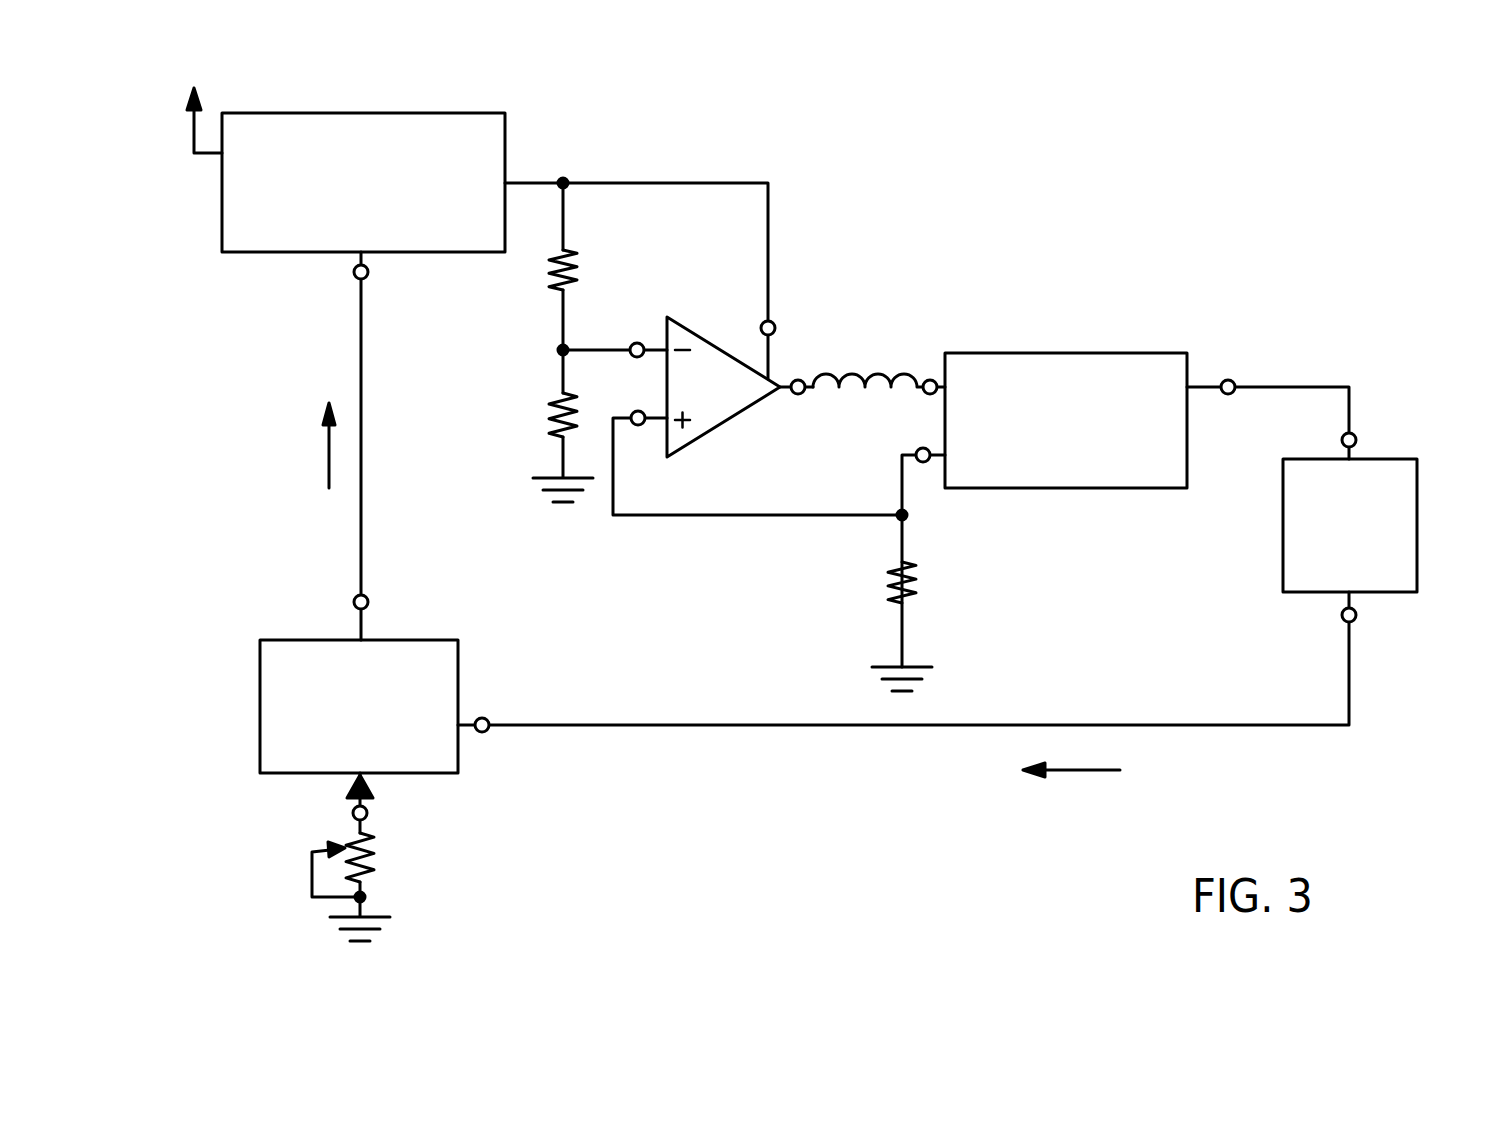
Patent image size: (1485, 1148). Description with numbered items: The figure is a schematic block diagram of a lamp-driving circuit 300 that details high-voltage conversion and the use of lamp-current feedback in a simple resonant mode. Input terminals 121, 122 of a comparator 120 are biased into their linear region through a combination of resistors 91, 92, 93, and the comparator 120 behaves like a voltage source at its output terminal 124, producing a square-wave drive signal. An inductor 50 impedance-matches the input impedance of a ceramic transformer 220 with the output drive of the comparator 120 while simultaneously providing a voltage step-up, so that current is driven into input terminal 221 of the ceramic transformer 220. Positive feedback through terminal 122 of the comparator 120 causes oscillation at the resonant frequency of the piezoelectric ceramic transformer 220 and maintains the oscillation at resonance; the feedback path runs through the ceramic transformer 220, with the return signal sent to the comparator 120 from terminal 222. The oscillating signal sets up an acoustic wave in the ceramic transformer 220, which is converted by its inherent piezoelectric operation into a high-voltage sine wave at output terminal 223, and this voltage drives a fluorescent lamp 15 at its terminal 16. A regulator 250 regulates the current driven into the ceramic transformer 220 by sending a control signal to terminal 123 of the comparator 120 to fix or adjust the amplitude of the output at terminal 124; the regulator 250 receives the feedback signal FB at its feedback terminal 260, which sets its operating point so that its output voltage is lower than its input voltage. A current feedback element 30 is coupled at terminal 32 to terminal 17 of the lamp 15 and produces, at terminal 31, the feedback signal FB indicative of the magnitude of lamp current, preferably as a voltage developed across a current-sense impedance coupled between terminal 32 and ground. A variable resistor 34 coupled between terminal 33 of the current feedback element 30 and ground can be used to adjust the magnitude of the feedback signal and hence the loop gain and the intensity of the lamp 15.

The lamp-driving circuit 300 is at (697, 778).
The regulator 250 is at (505, 143).
The feedback terminal 260 is at (369, 270).
The resistor 91 is at (557, 280).
The resistor 92 is at (555, 430).
The resistor 93 is at (896, 563).
The comparator 120 is at (732, 350).
The input terminal 121 is at (638, 343).
The input terminal 122 is at (640, 426).
The terminal 123 is at (775, 327).
The output terminal 124 is at (800, 395).
The inductor 50 is at (870, 336).
The ceramic transformer 220 is at (1082, 353).
The input terminal 221 is at (930, 380).
The terminal 222 is at (923, 462).
The output terminal 223 is at (1228, 380).
The fluorescent lamp 15 is at (1417, 558).
The terminal 16 is at (1357, 440).
The terminal 17 is at (1357, 615).
The current feedback element 30 is at (417, 773).
The terminal 31 is at (368, 601).
The terminal 32 is at (484, 717).
The terminal 33 is at (353, 813).
The variable resistor 34 is at (373, 868).